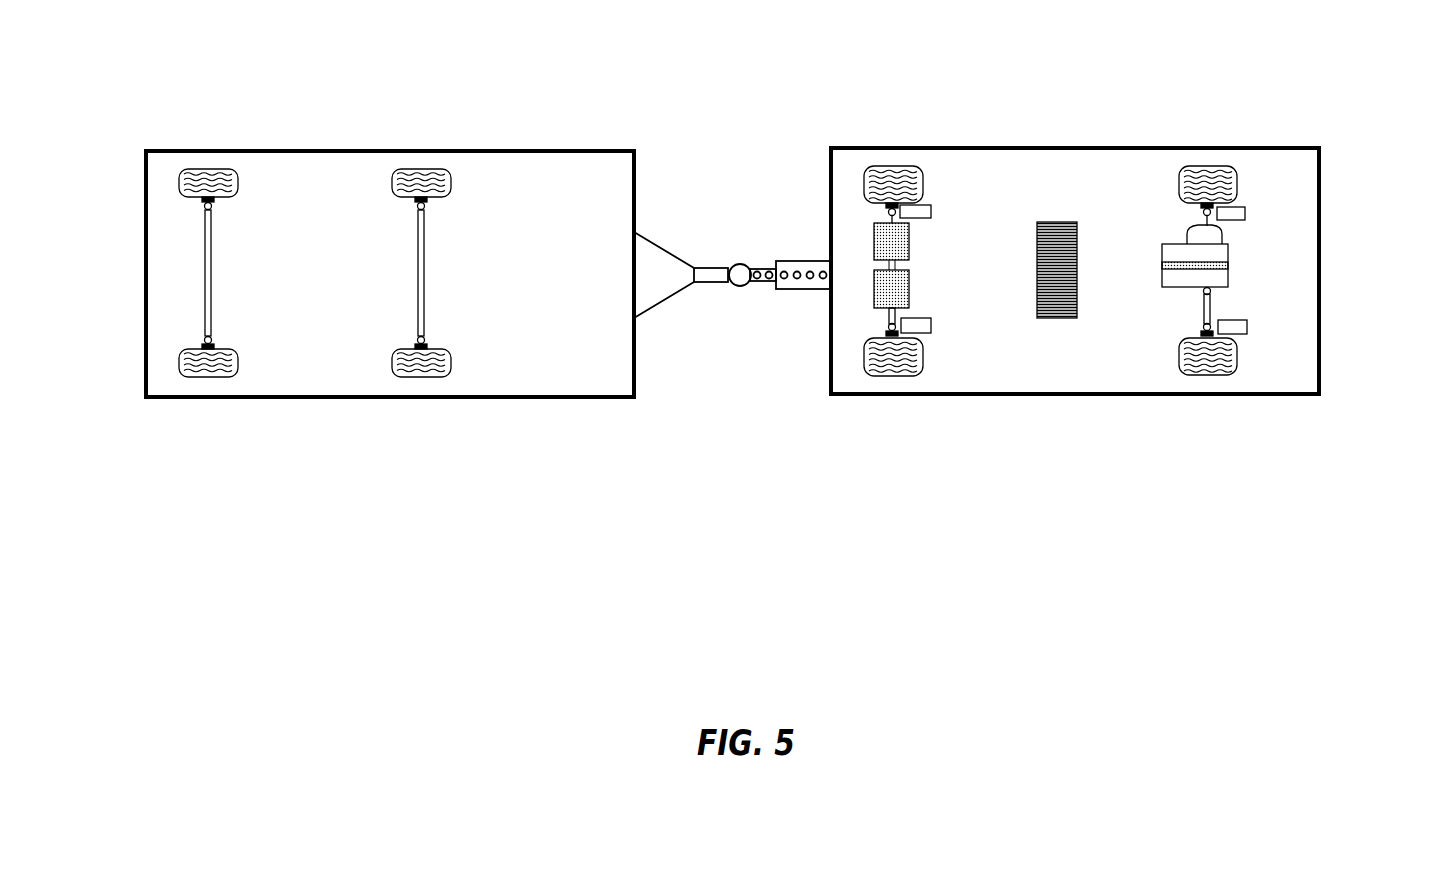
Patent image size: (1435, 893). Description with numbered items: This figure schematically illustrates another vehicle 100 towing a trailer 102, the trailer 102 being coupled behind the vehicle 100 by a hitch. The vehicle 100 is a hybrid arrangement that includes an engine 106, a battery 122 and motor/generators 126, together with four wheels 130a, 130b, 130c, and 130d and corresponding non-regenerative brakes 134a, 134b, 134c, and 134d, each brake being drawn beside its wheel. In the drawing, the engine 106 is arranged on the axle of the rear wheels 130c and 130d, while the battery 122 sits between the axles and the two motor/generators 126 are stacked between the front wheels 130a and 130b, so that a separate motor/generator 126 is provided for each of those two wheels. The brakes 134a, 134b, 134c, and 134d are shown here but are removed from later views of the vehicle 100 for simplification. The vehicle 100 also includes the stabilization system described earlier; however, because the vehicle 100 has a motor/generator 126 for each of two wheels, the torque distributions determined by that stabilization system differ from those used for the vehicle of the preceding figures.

The vehicle 100 is at (1320, 180).
The trailer 102 is at (182, 152).
The engine 106 is at (1228, 273).
The battery 122 is at (1055, 222).
The motor/generators 126 is at (909, 243).
The wheel 130a is at (872, 168).
The wheel 130b is at (880, 376).
The wheel 130c is at (1208, 375).
The wheel 130d is at (1196, 168).
The non-regenerative brake 134a is at (929, 205).
The non-regenerative brake 134b is at (926, 333).
The non-regenerative brake 134c is at (1245, 334).
The non-regenerative brake 134d is at (1240, 205).